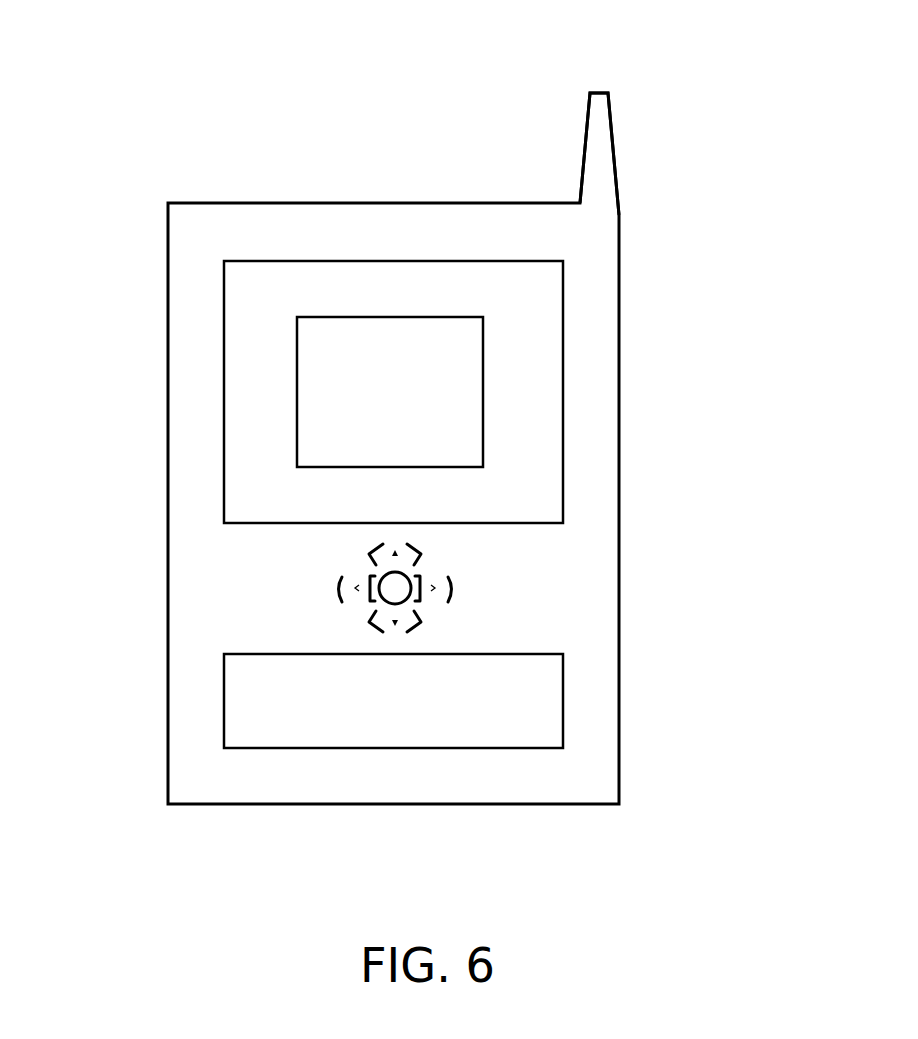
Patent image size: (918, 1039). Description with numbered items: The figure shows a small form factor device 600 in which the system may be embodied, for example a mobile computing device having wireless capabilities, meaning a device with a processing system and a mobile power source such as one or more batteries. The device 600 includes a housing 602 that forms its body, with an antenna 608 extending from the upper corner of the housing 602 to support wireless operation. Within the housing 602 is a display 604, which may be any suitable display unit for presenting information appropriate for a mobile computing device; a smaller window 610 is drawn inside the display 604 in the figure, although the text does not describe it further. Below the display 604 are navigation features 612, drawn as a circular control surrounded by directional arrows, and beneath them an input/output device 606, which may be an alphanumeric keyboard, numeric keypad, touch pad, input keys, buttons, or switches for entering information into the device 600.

The small form factor device 600 is at (435, 427).
The housing 602 is at (620, 504).
The display 604 is at (563, 279).
The input/output (I/O) device 606 is at (564, 692).
The antenna 608 is at (586, 140).
The display window 610 is at (485, 410).
The navigation features 612 is at (463, 580).